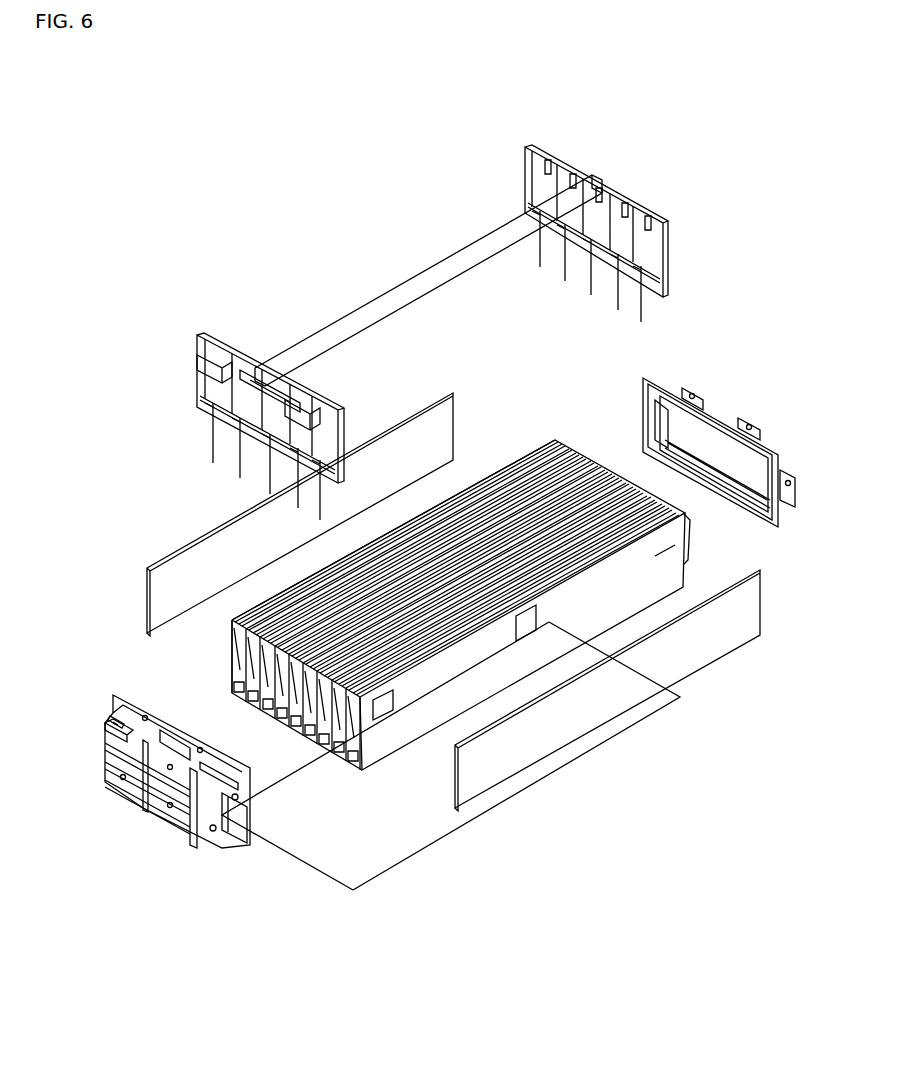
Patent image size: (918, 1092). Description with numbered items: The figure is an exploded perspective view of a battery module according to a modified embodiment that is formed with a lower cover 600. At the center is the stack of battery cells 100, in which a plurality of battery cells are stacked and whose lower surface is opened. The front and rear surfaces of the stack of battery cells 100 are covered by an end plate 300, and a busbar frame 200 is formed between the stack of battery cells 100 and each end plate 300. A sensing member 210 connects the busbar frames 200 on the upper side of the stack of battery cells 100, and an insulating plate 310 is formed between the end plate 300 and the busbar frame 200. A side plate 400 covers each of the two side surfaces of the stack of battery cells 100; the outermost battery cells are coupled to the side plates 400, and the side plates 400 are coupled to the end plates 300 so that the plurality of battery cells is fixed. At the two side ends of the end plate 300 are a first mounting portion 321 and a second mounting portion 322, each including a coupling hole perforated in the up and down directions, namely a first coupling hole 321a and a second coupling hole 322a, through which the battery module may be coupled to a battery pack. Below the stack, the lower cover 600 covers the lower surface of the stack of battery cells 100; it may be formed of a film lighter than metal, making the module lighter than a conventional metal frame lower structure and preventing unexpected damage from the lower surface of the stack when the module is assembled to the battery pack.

The stack of battery cells 100 is at (525, 432).
The busbar frame 200 is at (663, 258).
The sensing member 210 is at (408, 290).
The end plate 300 is at (411, 607).
The insulating plate 310 is at (710, 455).
The first mounting portion 321 is at (87, 730).
The first coupling hole 321a is at (113, 720).
The second mounting portion 322 is at (167, 817).
The second coupling hole 322a is at (207, 790).
The side plate 400 is at (698, 652).
The lower cover 600 is at (375, 848).